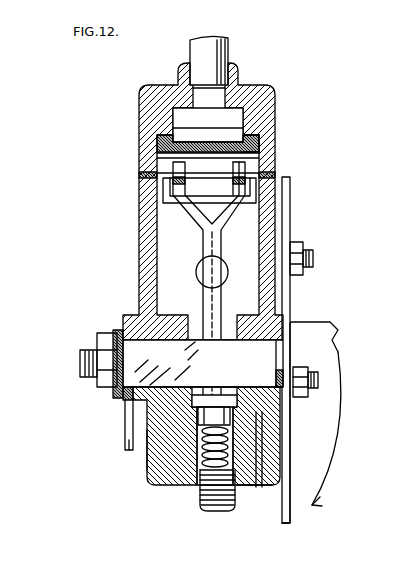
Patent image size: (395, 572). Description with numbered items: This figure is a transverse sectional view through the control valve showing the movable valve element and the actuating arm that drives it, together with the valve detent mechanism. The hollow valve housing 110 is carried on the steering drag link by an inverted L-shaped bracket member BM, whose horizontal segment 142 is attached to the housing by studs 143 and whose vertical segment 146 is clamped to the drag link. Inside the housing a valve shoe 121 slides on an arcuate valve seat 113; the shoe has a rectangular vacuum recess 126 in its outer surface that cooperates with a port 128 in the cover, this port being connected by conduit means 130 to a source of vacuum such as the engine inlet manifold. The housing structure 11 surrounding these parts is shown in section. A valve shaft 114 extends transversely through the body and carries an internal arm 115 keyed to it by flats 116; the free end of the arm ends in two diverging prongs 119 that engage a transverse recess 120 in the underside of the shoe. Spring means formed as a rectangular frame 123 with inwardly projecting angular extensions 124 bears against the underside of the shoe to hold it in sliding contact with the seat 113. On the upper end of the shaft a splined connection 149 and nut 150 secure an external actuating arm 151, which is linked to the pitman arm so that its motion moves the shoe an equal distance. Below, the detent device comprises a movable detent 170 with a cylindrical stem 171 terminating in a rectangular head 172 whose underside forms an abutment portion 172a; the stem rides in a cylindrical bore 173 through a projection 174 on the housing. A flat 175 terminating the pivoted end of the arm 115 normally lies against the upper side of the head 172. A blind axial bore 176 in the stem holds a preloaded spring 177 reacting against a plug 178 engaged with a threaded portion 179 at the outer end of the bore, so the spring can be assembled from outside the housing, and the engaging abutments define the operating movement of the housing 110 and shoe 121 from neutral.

The housing 11 is at (273, 96).
The conduit means 130 is at (216, 60).
The port 128 is at (224, 115).
The vacuum recess 126 is at (207, 135).
The valve shoe 121 is at (162, 146).
The valve seat 113 is at (262, 139).
The transverse recess 120 is at (252, 160).
The rectangular frame 123 is at (266, 175).
The angular extensions 124 is at (166, 194).
The diverging prongs 119 is at (188, 218).
The arm 115 is at (205, 303).
The valve housing 110 is at (277, 298).
The studs 143 is at (303, 253).
The vertical segment 146 is at (325, 344).
The bracket member BM is at (323, 447).
The horizontal segment 142 is at (288, 525).
The flats 116 is at (190, 378).
The flat 175 is at (262, 372).
The valve shaft 114 is at (81, 363).
The nut 150 is at (118, 378).
The splined connection 149 is at (117, 383).
The external actuating arm 151 is at (125, 438).
The projection 174 is at (152, 452).
The cylindrical stem 171 is at (200, 440).
The head 172 is at (238, 400).
The abutment portion 172a is at (231, 414).
The spring 177 is at (233, 455).
The blind axial bore 176 is at (196, 470).
The detent 170 is at (199, 468).
The plug 178 is at (203, 498).
The cylindrical bore 173 is at (261, 472).
The threaded portion 179 is at (243, 488).